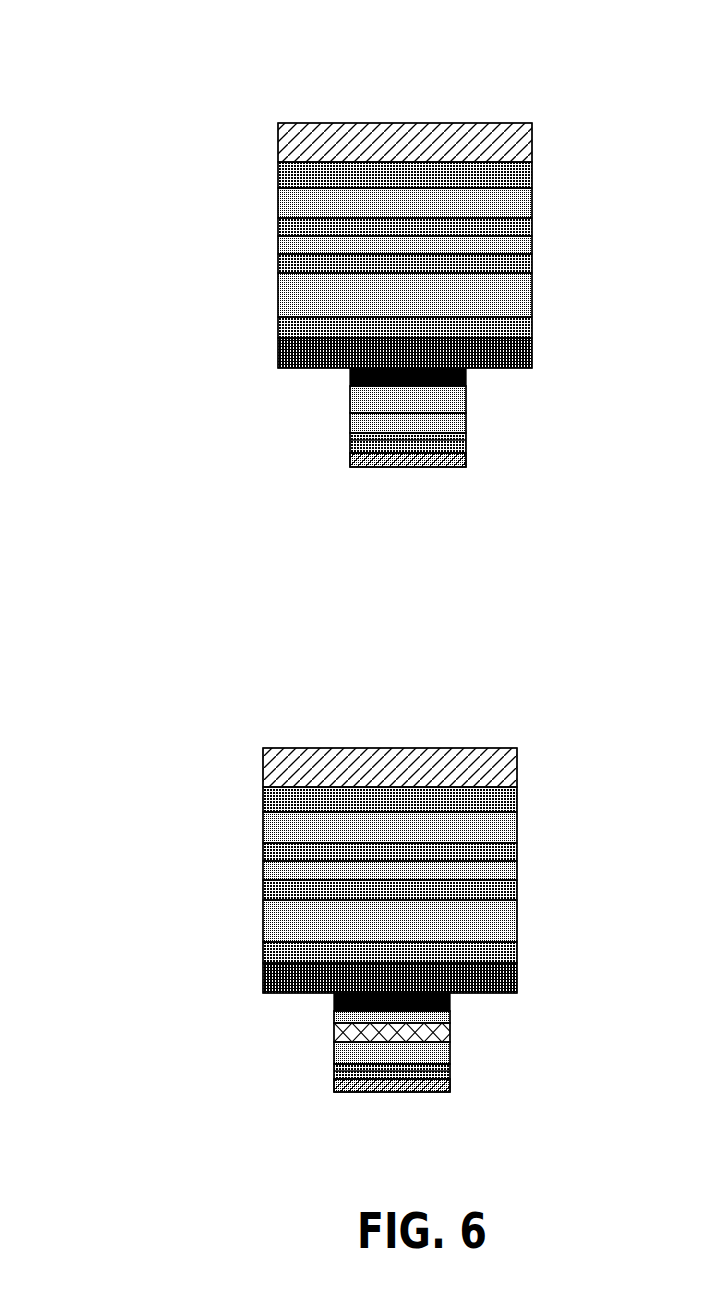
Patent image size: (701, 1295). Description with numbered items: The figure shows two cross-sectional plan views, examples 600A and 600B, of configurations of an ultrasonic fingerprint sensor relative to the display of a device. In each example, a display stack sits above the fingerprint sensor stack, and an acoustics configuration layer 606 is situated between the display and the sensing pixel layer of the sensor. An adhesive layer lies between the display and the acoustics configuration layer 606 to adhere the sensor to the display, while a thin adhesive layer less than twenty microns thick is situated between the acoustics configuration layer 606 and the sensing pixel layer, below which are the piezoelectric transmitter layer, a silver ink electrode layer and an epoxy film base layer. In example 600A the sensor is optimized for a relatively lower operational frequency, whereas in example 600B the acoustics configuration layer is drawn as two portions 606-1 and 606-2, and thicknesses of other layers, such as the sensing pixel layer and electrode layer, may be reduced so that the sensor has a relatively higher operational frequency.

The example 600A is at (172, 27).
The example 600B is at (166, 680).
The acoustics configuration layer 606 is at (462, 402).
The acoustics configuration layer 606-1 is at (447, 1018).
The acoustics configuration layer 606-2 is at (334, 1037).